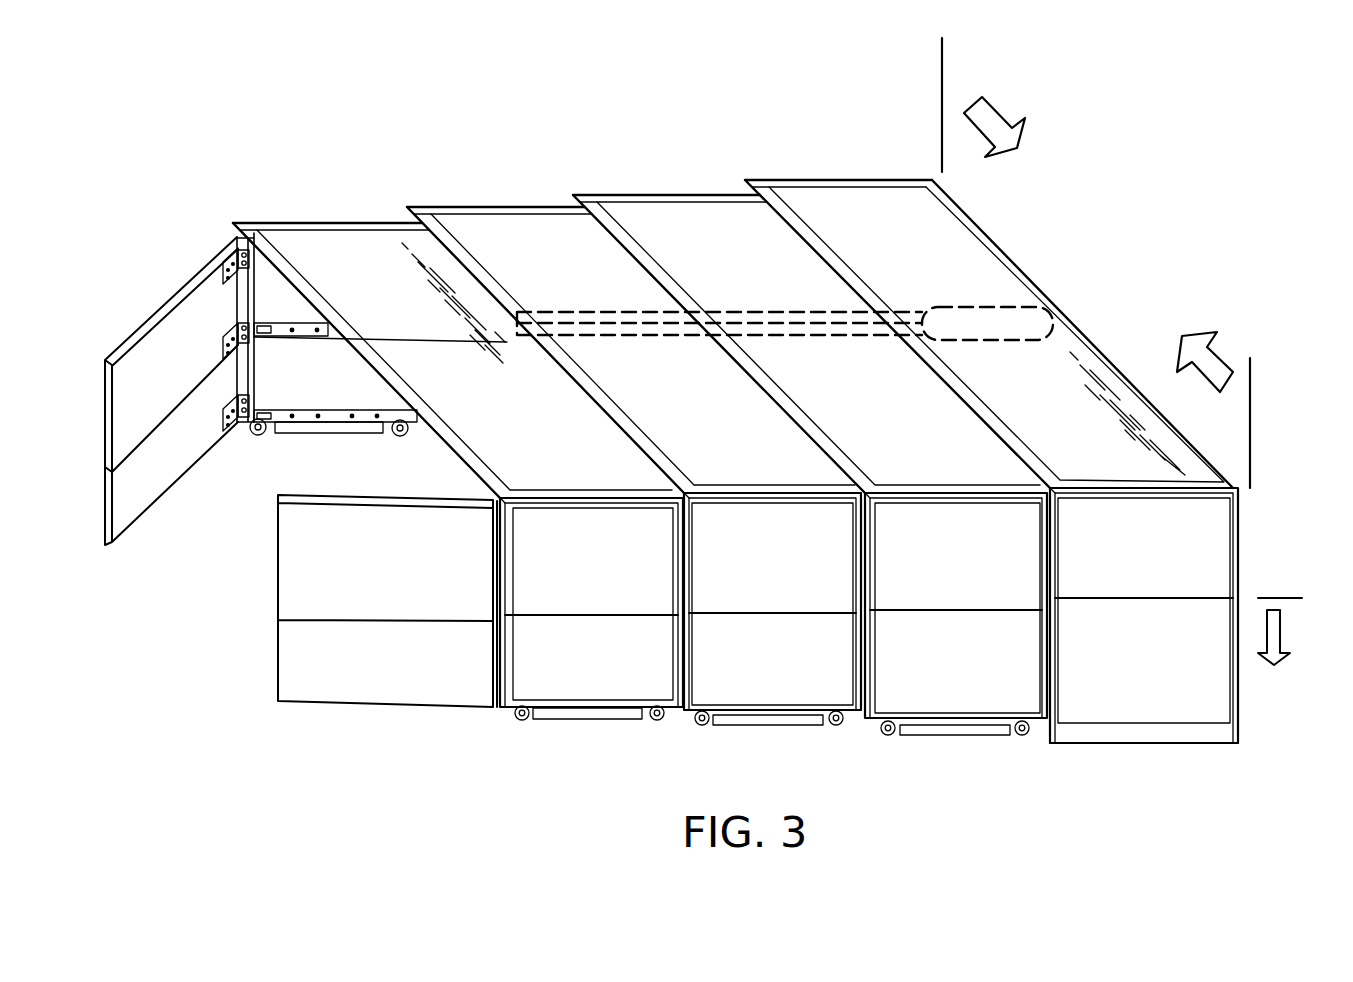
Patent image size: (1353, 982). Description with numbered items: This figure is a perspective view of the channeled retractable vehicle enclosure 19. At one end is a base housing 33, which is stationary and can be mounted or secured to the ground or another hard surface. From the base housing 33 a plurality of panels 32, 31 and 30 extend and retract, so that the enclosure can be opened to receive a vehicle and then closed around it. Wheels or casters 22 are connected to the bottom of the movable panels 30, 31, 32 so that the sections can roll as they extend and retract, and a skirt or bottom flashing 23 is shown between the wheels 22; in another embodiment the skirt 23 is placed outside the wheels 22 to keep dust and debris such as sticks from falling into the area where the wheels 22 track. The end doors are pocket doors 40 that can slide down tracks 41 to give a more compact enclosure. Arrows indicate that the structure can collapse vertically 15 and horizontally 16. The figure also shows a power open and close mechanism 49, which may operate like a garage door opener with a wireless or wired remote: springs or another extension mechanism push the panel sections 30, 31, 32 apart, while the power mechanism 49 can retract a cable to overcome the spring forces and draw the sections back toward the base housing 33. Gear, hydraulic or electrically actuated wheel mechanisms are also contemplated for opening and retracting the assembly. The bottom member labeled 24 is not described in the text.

The channeled retractable vehicle enclosure 19 is at (492, 156).
The horizontal collapse direction 16 is at (1000, 112).
The power open and close mechanism 49 is at (993, 307).
The vertical collapse direction 15 is at (1281, 661).
The pocket door 40 is at (158, 500).
The track 41 is at (287, 422).
The panel 30 is at (618, 653).
The panel 31 is at (793, 654).
The panel 32 is at (985, 653).
The base housing 33 is at (1165, 642).
The wheel 22 is at (892, 736).
The skirt 23 is at (587, 719).
The base 24 is at (1152, 743).